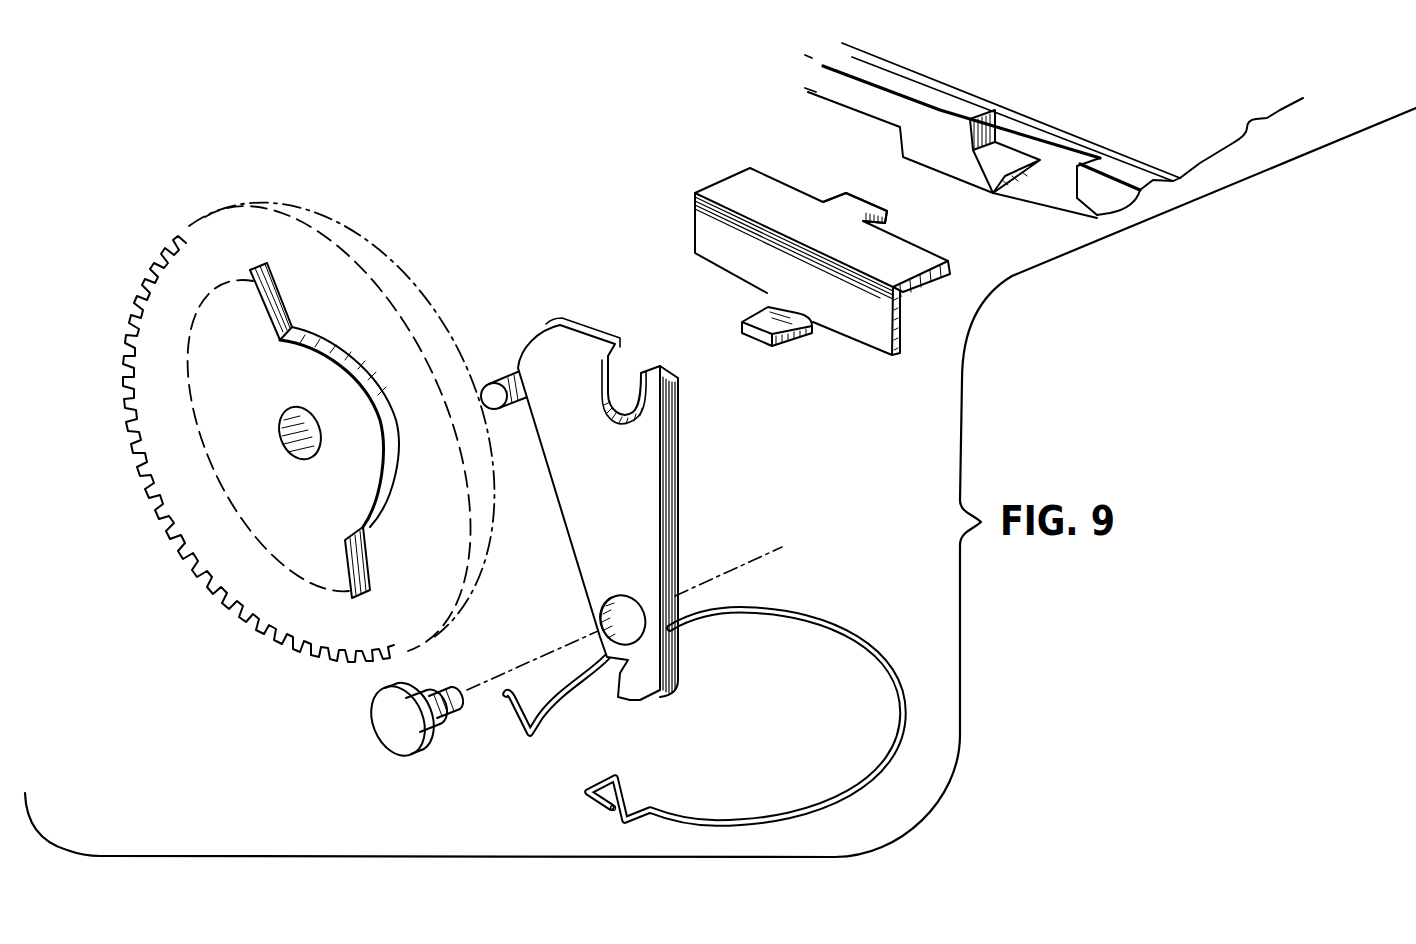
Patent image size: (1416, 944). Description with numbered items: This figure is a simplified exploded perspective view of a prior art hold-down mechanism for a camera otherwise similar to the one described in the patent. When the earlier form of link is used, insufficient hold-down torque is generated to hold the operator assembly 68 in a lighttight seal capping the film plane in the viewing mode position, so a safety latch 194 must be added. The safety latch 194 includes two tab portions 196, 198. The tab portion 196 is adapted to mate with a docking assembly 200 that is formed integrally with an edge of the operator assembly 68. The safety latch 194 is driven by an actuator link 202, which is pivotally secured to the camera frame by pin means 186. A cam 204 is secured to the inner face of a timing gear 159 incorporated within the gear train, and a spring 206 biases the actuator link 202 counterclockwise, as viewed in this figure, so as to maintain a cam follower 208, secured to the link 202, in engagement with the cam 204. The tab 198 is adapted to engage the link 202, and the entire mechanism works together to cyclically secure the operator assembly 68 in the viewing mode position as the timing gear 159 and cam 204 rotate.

The operator assembly 68 is at (862, 121).
The timing gear 159 is at (178, 240).
The pin means 186 is at (392, 724).
The safety latch 194 is at (690, 214).
The tab portion 196 is at (860, 203).
The tab portion 198 is at (775, 333).
The docking assembly 200 is at (924, 113).
The actuator link 202 is at (683, 466).
The cam 204 is at (289, 305).
The spring 206 is at (845, 641).
The cam follower 208 is at (495, 400).